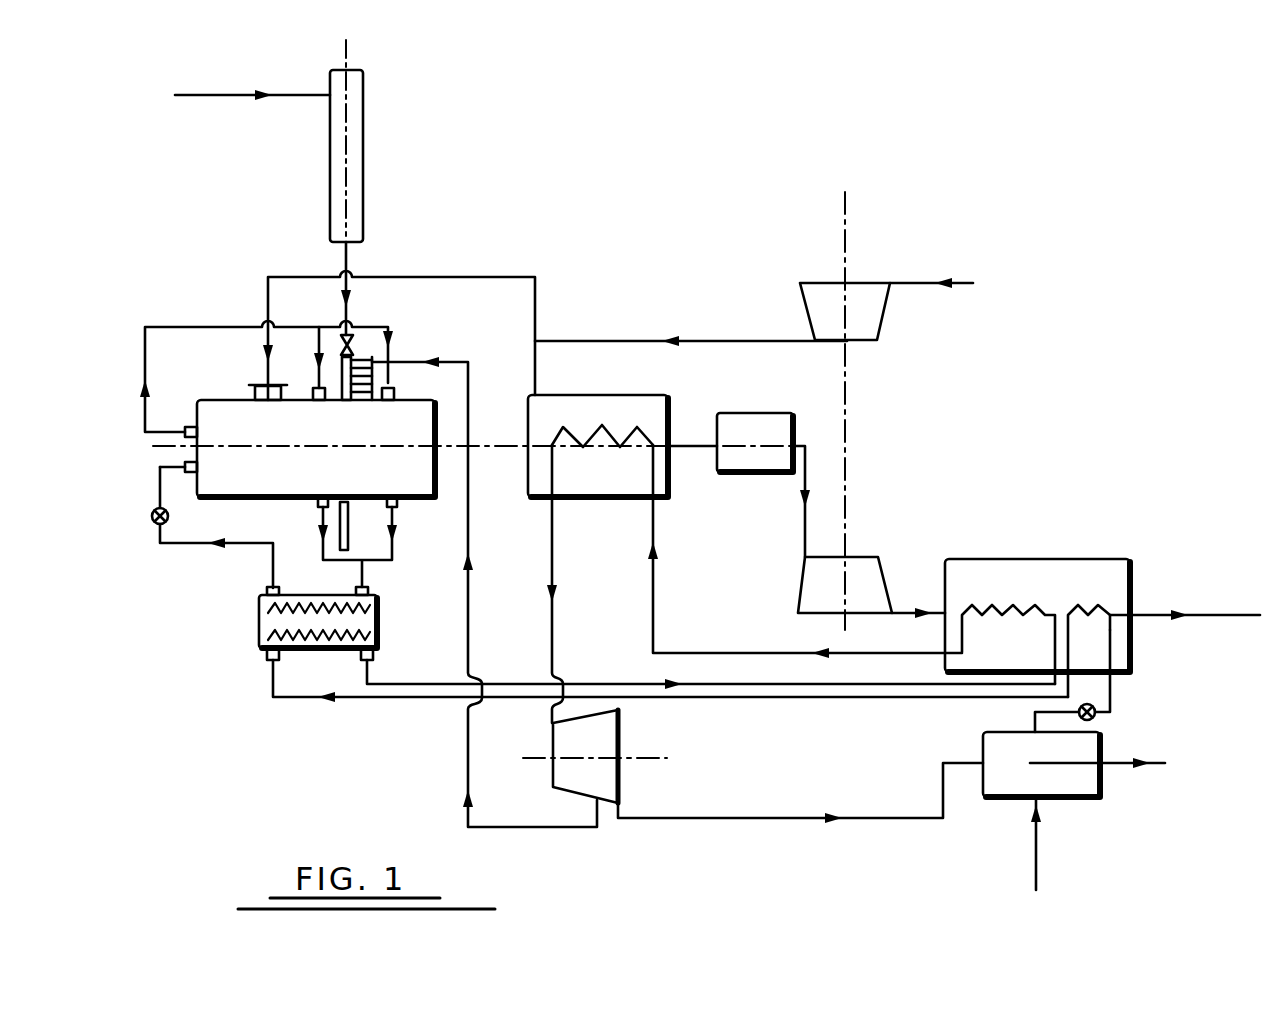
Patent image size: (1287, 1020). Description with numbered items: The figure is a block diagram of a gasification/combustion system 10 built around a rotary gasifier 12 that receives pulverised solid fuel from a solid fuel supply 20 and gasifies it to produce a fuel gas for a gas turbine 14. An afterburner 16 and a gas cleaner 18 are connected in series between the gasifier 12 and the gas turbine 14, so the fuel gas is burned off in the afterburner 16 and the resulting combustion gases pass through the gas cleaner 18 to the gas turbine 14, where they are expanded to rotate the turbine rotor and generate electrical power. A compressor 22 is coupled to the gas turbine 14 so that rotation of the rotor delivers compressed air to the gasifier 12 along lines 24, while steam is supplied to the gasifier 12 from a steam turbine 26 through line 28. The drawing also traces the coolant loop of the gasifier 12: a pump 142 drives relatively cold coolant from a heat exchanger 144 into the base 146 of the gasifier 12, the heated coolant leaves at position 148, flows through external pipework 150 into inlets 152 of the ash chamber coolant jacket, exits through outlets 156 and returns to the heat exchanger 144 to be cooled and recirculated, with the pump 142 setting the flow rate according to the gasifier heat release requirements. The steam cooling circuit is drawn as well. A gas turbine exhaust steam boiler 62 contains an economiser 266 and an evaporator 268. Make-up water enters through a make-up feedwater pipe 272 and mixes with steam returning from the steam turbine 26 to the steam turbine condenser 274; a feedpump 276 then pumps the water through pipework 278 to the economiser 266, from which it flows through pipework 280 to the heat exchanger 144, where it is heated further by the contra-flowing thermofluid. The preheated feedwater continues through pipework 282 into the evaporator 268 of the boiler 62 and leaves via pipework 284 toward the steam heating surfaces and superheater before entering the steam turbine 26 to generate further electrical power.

The gasification/combustion system 10 is at (792, 247).
The rotary gasifier 12 is at (242, 398).
The gas turbine 14 is at (880, 558).
The afterburner 16 is at (635, 390).
The gas cleaner 18 is at (753, 477).
The solid fuel supply 20 is at (370, 158).
The compressor 22 is at (880, 273).
The lines 24 is at (473, 275).
The steam turbine 26 is at (625, 742).
The line 28 is at (470, 410).
The gas turbine exhaust steam boiler 62 is at (1108, 552).
The pump 142 is at (152, 518).
The heat exchanger 144 is at (372, 623).
The base 146 is at (197, 468).
The position 148 is at (197, 432).
The external pipework 150 is at (220, 327).
The inlets 152 is at (321, 399).
The outlets 156 is at (320, 507).
The economiser 266 is at (1107, 602).
The evaporator 268 is at (1008, 603).
The make-up feedwater pipe 272 is at (1040, 852).
The steam turbine condenser 274 is at (1102, 787).
The feedpump 276 is at (1097, 713).
The pipework 278 is at (1110, 653).
The pipework 280 is at (757, 699).
The pipework 282 is at (617, 683).
The pipework 284 is at (727, 630).